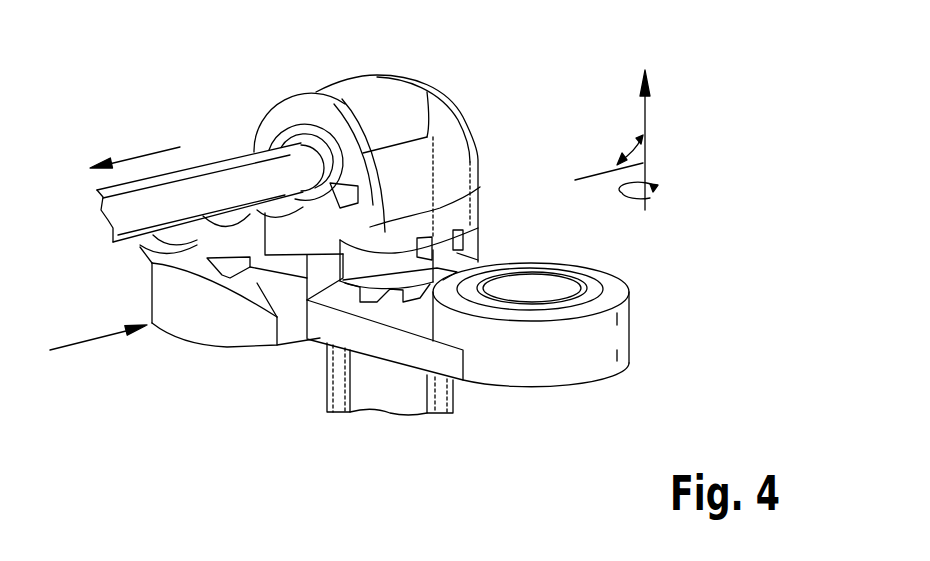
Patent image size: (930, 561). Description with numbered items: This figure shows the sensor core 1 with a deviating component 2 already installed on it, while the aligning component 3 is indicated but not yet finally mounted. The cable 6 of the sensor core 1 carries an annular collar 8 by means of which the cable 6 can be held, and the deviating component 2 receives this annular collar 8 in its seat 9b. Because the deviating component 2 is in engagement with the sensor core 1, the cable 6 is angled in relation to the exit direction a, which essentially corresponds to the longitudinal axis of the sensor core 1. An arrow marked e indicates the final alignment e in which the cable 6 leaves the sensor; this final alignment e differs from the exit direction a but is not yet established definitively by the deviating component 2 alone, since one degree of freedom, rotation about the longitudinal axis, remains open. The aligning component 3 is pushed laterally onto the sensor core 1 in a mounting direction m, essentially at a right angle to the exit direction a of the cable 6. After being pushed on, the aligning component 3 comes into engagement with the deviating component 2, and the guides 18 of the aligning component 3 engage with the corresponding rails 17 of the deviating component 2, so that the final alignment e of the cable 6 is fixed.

The sensor core 1 is at (505, 425).
The deviating component 2 is at (452, 78).
The aligning component 3 is at (135, 292).
The cable 6 is at (238, 168).
The annular collar 8 is at (296, 141).
The seat 9b is at (264, 136).
The rails 17 is at (356, 230).
The guides 18 is at (224, 267).
The final alignment e is at (148, 148).
The mounting direction m is at (90, 340).
The exit direction a is at (643, 112).